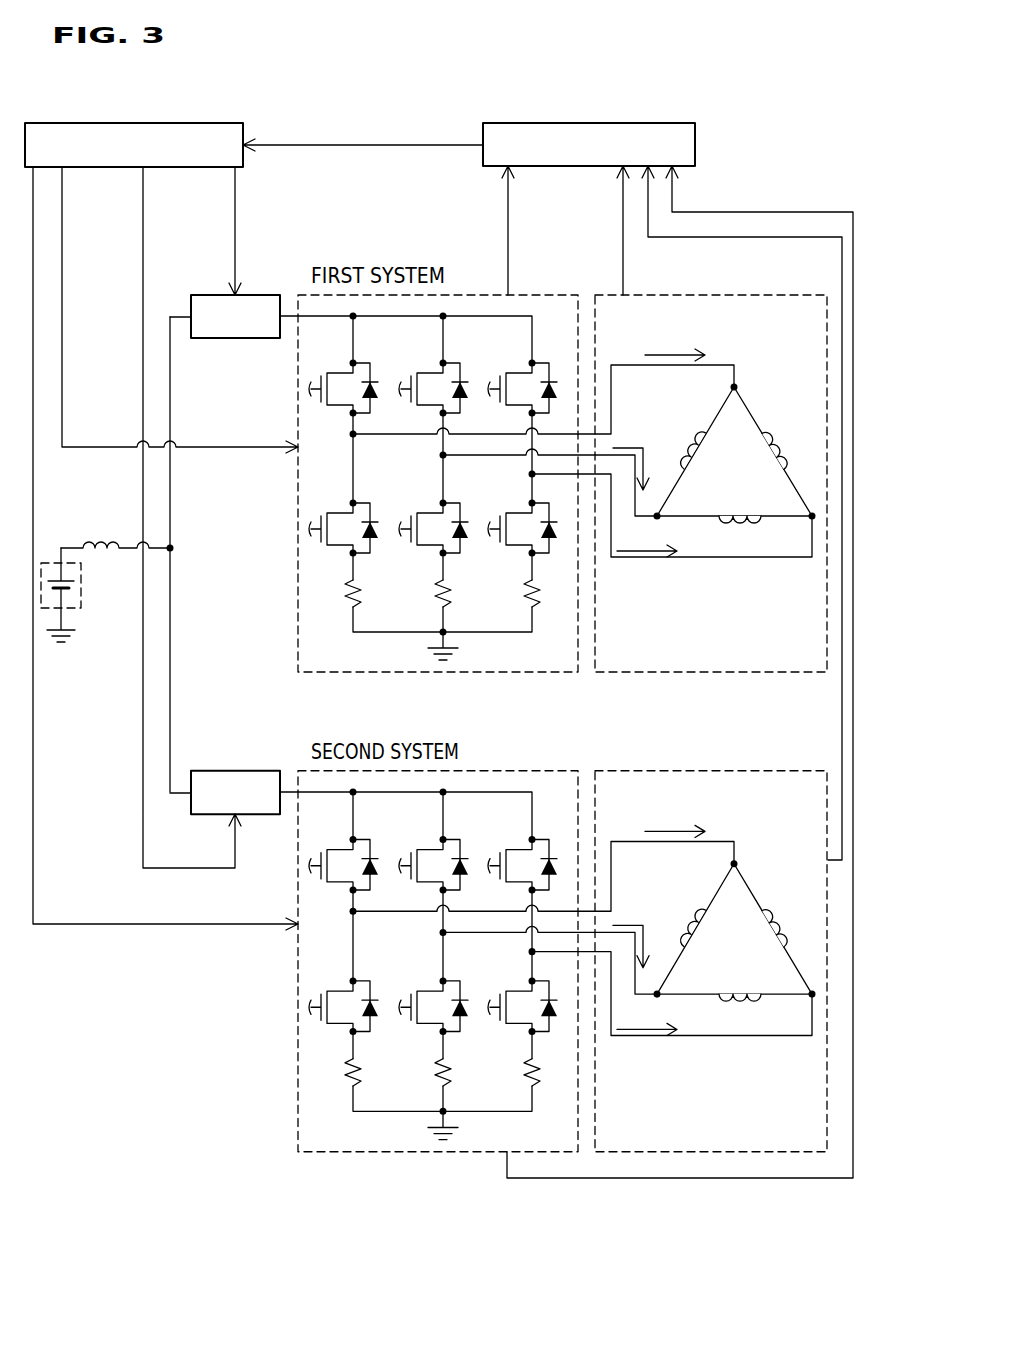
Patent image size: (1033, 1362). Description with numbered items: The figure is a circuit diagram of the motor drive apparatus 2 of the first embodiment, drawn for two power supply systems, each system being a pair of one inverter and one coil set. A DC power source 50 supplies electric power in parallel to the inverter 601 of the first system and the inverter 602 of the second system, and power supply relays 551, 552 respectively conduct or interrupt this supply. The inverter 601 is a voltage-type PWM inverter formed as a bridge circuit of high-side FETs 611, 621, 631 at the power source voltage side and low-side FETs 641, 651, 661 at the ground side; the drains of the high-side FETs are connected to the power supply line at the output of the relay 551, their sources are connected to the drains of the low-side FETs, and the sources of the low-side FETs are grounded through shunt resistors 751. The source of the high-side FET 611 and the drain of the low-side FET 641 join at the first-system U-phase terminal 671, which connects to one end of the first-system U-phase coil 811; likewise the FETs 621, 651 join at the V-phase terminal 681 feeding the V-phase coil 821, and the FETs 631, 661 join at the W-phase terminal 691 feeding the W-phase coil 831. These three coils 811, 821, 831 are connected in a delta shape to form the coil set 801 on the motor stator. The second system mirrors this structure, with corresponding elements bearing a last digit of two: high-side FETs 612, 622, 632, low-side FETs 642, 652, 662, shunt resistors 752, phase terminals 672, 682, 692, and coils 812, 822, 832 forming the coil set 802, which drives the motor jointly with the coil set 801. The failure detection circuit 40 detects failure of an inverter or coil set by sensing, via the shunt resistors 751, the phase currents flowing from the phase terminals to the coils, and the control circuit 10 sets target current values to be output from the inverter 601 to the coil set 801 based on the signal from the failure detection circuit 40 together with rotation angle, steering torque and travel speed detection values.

The motor drive apparatus 2 is at (731, 118).
The control circuit 10 is at (140, 123).
The failure detection circuit 40 is at (593, 123).
The DC power source 50 is at (70, 612).
The power supply relay 551 is at (260, 295).
The power supply relay 552 is at (225, 765).
The inverter 601 is at (527, 294).
The inverter 602 is at (442, 943).
The high-side FET 611 is at (337, 361).
The high-side FET 621 is at (426, 361).
The high-side FET 631 is at (515, 361).
The low-side FET 641 is at (337, 502).
The low-side FET 651 is at (426, 502).
The low-side FET 661 is at (515, 504).
The high-side FET 612 is at (343, 847).
The high-side FET 622 is at (433, 847).
The high-side FET 632 is at (522, 847).
The low-side FET 642 is at (343, 989).
The low-side FET 652 is at (433, 990).
The low-side FET 662 is at (522, 994).
The U1-terminal 671 is at (351, 434).
The V1-terminal 681 is at (440, 455).
The W1-terminal 691 is at (530, 474).
The U2-terminal 672 is at (521, 883).
The V2-terminal 682 is at (525, 956).
The W2-terminal 692 is at (643, 984).
The shunt resistors 751 is at (540, 583).
The shunt resistors 752 is at (462, 1082).
The coil set 801 is at (737, 294).
The coil set 802 is at (711, 943).
The U1-coil 811 is at (690, 443).
The V1-coil 821 is at (745, 526).
The W1-coil 831 is at (789, 449).
The U2-coil 812 is at (688, 910).
The V2-coil 822 is at (757, 1000).
The W2-coil 832 is at (780, 916).